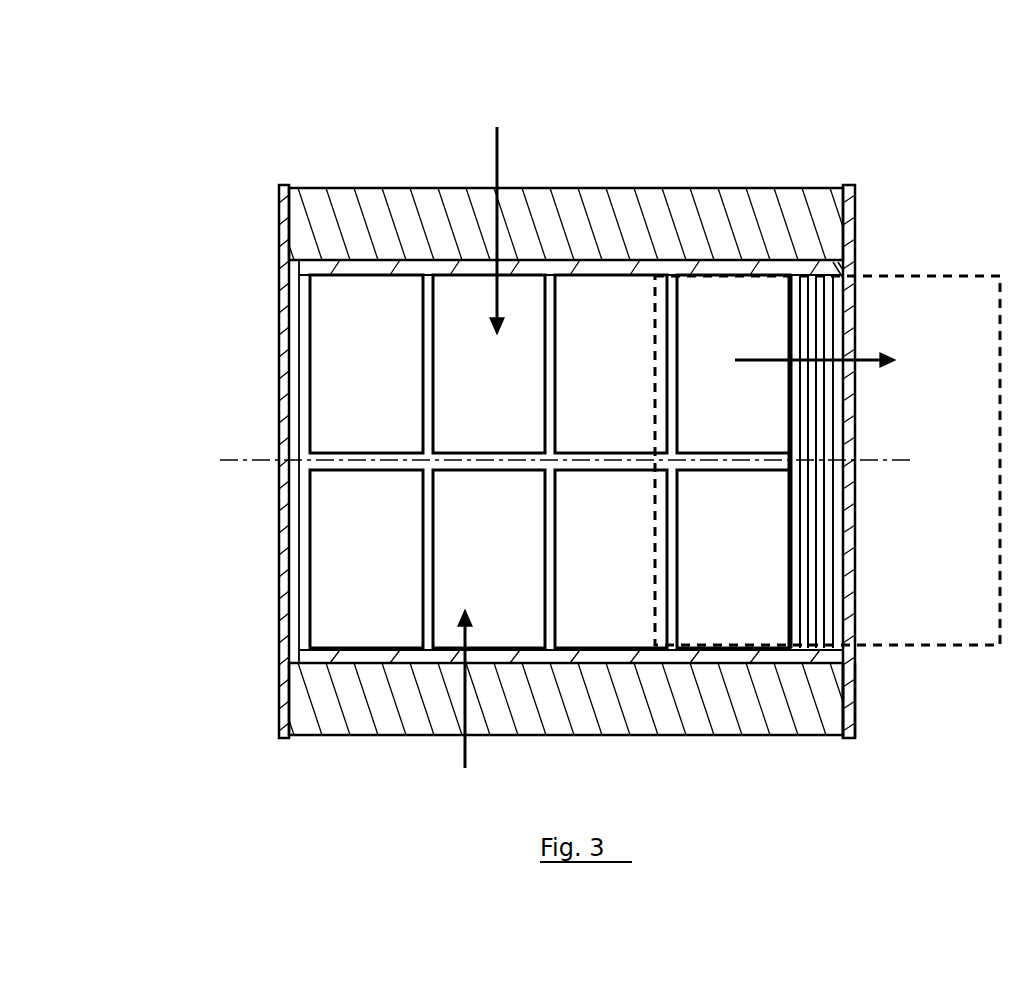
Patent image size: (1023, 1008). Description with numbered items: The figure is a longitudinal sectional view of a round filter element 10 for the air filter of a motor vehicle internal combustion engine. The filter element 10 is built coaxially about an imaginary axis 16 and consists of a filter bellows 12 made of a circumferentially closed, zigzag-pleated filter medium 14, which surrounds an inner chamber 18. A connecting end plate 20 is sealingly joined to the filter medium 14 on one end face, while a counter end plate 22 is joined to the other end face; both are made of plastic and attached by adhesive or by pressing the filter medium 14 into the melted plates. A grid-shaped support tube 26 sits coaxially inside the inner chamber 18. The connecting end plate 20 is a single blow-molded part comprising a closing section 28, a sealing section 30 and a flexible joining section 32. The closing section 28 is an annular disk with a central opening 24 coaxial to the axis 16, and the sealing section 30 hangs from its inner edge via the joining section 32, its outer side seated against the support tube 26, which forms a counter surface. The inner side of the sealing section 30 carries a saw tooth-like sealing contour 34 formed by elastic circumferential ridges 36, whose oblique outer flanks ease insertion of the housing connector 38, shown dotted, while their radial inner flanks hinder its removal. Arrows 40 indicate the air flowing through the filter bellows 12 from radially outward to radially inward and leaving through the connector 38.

The filter element 10 is at (299, 124).
The filter bellows 12 is at (432, 182).
The filter medium 14 is at (345, 733).
The axis 16 is at (262, 462).
The inner chamber 18 is at (392, 382).
The connecting end plate 20 is at (852, 180).
The counter end plate 22 is at (278, 585).
The central opening 24 is at (823, 462).
The support tube 26 is at (527, 645).
The closing section 28 is at (857, 700).
The sealing section 30 is at (820, 265).
The flexible joining section 32 is at (858, 278).
The sealing contour 34 is at (830, 478).
The ridges 36 is at (800, 430).
The connector 38 is at (975, 648).
The arrows 40 is at (499, 176).